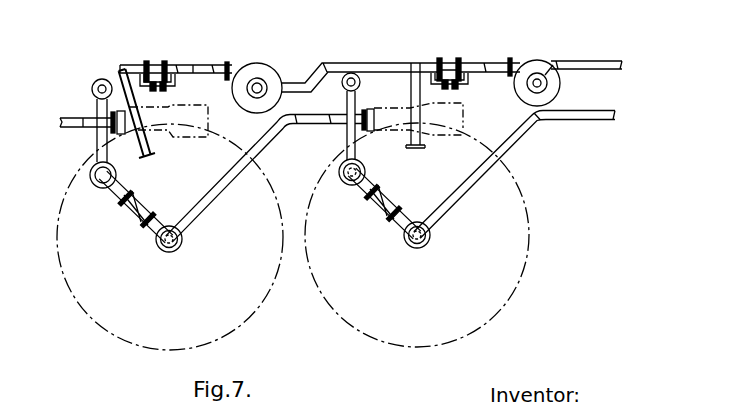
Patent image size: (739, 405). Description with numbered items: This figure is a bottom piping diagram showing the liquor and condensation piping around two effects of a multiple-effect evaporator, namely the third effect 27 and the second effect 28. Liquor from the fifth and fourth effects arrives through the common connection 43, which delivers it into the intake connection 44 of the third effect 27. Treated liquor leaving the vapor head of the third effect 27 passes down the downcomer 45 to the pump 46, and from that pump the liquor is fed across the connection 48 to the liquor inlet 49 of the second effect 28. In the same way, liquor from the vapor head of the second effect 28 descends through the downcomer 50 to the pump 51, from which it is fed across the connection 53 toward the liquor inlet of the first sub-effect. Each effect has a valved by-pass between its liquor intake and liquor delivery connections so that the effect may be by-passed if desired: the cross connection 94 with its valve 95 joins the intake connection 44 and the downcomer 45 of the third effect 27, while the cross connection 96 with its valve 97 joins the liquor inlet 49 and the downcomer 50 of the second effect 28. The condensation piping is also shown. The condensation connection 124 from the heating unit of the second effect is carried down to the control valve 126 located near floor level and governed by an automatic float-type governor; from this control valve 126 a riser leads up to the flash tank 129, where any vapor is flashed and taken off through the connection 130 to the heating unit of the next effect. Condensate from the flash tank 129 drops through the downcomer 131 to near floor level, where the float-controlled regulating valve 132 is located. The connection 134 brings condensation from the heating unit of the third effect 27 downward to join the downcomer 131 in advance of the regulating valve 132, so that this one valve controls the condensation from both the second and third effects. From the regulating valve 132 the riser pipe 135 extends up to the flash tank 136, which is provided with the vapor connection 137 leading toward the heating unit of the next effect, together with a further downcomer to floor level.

The third effect 27 is at (538, 217).
The second effect 28 is at (68, 308).
The common connection 43 is at (510, 152).
The intake connection 44 is at (432, 237).
The downcomer 45 is at (340, 172).
The pump 46 is at (400, 106).
The connection 48 is at (262, 153).
The liquor inlet 49 is at (183, 239).
The downcomer 50 is at (90, 180).
The pump 51 is at (170, 107).
The connection 53 is at (66, 114).
The cross connection 94 is at (373, 180).
The valve 95 is at (390, 193).
The cross connection 96 is at (127, 183).
The valve 97 is at (147, 200).
The condensation connection 124 is at (150, 152).
The control valve 126 is at (152, 62).
The flash tank 129 is at (257, 63).
The connection 130 is at (250, 97).
The downcomer 131 is at (316, 71).
The regulating valve 132 is at (448, 58).
The connection 134 is at (421, 118).
The riser pipe 135 is at (500, 58).
The flash tank 136 is at (538, 61).
The vapor connection 137 is at (529, 89).